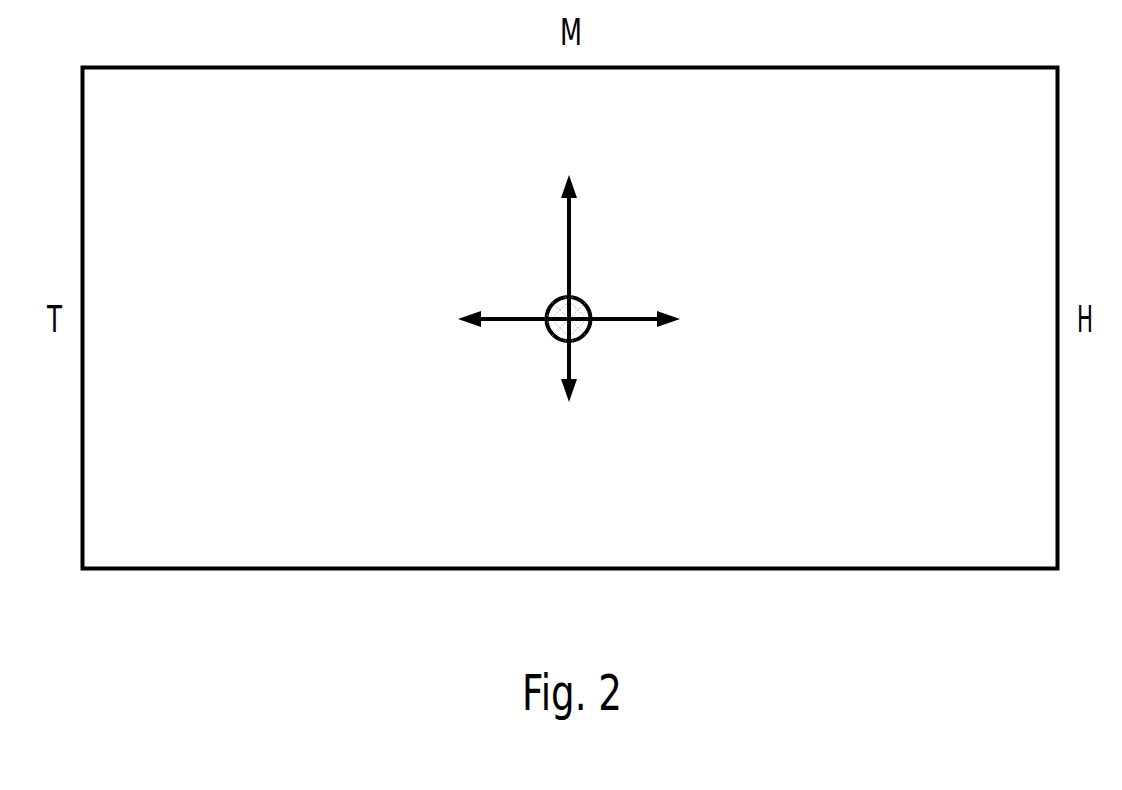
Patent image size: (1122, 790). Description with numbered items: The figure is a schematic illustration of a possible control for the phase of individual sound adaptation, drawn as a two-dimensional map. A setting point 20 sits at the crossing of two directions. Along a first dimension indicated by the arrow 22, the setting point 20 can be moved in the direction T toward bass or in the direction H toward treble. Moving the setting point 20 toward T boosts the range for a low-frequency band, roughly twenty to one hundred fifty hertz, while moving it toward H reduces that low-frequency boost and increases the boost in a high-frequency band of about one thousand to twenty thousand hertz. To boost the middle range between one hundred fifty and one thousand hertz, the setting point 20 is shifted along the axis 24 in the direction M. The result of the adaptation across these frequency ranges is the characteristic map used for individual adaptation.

The setting point 20 is at (584, 298).
The arrow 22 is at (503, 321).
The axis 24 is at (571, 360).